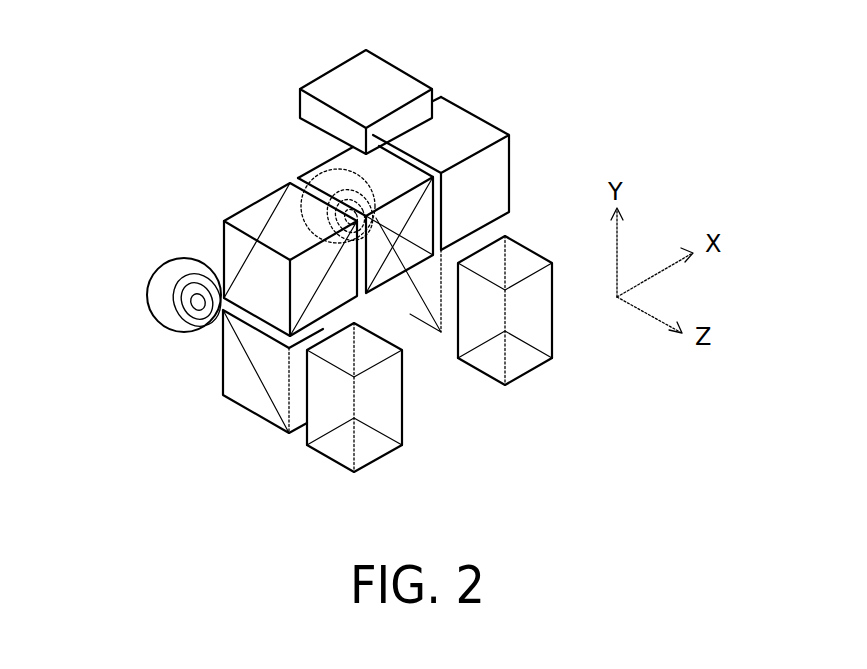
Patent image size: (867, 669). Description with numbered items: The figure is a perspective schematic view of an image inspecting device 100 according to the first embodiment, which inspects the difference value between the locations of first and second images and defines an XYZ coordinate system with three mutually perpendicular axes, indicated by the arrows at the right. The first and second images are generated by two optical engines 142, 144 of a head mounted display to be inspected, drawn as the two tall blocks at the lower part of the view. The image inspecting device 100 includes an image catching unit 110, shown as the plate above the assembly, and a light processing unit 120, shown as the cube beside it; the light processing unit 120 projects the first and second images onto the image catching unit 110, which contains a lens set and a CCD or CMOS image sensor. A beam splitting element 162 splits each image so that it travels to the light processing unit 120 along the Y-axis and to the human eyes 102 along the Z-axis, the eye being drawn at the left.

The image inspecting device 100 is at (152, 77).
The human eyes 102 is at (158, 262).
The image catching unit 110 is at (298, 100).
The light processing unit 120 is at (512, 158).
The optical engine 142 is at (370, 461).
The optical engine 144 is at (540, 367).
The beam splitting element 162 is at (255, 374).